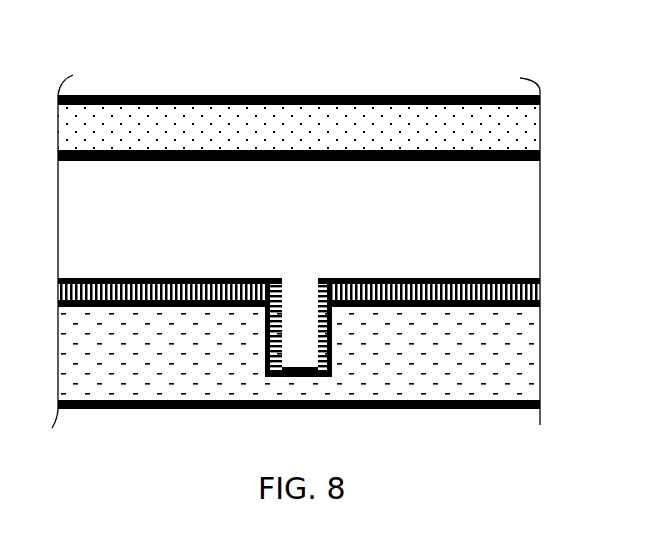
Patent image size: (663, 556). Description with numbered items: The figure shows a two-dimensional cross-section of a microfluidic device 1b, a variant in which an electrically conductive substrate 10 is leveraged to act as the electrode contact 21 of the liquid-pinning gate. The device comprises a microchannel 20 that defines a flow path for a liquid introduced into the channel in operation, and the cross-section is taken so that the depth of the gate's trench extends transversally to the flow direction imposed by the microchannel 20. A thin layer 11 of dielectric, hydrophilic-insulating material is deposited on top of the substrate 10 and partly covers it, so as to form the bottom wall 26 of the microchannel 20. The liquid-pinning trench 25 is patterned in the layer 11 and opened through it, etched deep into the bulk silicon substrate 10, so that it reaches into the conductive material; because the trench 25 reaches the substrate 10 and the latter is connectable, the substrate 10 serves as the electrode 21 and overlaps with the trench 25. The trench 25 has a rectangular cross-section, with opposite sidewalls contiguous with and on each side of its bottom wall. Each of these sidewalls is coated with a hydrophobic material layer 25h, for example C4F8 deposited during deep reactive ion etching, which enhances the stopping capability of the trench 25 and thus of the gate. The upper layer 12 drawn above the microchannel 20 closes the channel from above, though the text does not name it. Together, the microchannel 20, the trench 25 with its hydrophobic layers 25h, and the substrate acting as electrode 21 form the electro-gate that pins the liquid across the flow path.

The microfluidic device 1b is at (537, 452).
The electrically conductive substrate 10 is at (299, 400).
The electrode contact 21 is at (437, 390).
The dielectric material layer 11 is at (57, 304).
The wiring layer 12 is at (428, 93).
The microchannel 20 is at (110, 188).
The liquid-pinning trench 25 is at (300, 282).
The hydrophobic material layer 25h is at (272, 278).
The bottom wall 26 is at (165, 278).